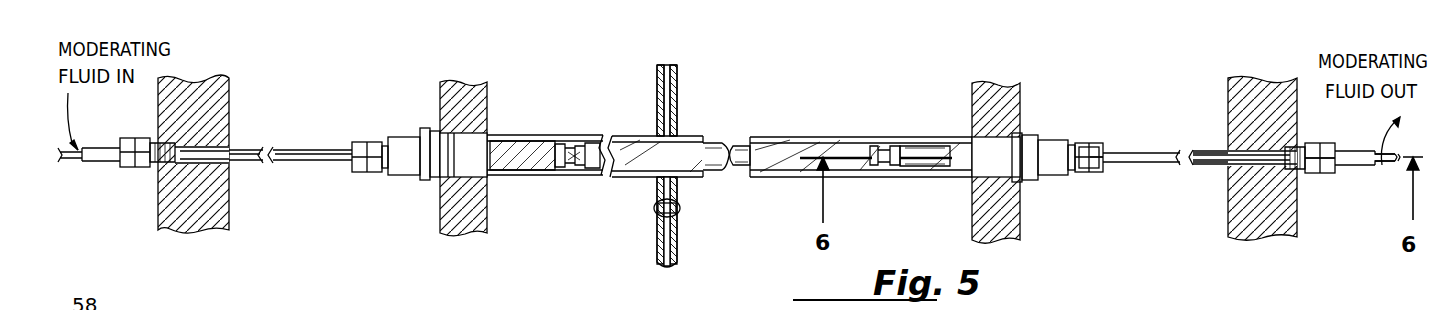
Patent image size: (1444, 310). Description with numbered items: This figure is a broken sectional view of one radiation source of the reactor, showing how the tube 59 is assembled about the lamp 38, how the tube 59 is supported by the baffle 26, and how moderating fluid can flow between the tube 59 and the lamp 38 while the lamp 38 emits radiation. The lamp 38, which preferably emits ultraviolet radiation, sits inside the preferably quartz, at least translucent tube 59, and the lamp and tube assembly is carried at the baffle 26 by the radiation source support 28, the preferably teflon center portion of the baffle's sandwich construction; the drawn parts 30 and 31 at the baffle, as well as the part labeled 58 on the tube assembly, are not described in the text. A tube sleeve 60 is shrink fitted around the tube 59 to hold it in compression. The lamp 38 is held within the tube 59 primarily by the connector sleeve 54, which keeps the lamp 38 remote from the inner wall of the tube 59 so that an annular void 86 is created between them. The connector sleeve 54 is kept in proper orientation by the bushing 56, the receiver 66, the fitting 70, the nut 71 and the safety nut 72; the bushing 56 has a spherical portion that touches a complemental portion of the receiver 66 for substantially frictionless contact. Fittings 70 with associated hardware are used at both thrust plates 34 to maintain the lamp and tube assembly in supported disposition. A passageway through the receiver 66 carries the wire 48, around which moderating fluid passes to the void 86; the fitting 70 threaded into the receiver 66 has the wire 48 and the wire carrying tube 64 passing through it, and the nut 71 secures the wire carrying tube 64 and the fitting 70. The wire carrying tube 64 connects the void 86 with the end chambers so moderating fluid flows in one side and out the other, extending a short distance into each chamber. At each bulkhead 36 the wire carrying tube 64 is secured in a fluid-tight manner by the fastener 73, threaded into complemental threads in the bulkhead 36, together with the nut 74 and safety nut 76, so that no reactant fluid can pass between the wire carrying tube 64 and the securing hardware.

The baffle 26 is at (655, 179).
The radiation source support 28 is at (668, 266).
The outer tube 30 is at (627, 265).
The coupling 31 is at (680, 236).
The thrust plate 34 is at (465, 108).
The bulkhead 36 is at (205, 110).
The radiation emitting lamp 38 is at (748, 166).
The wire 48 is at (1390, 163).
The connector sleeve 54 is at (928, 146).
The bushing 56 is at (1020, 135).
The fuel tube 58 is at (632, 130).
The tube 59 is at (795, 137).
The tube sleeve 60 is at (494, 301).
The wire carrying tube 64 is at (1157, 160).
The receiver 66 is at (1038, 150).
The fitting 70 is at (1082, 146).
The nut 71 is at (1084, 152).
The safety nut 72 is at (1097, 163).
The fastener 73 is at (1302, 148).
The nut 74 is at (1313, 172).
The safety nut 76 is at (1328, 172).
The annular void 86 is at (768, 138).